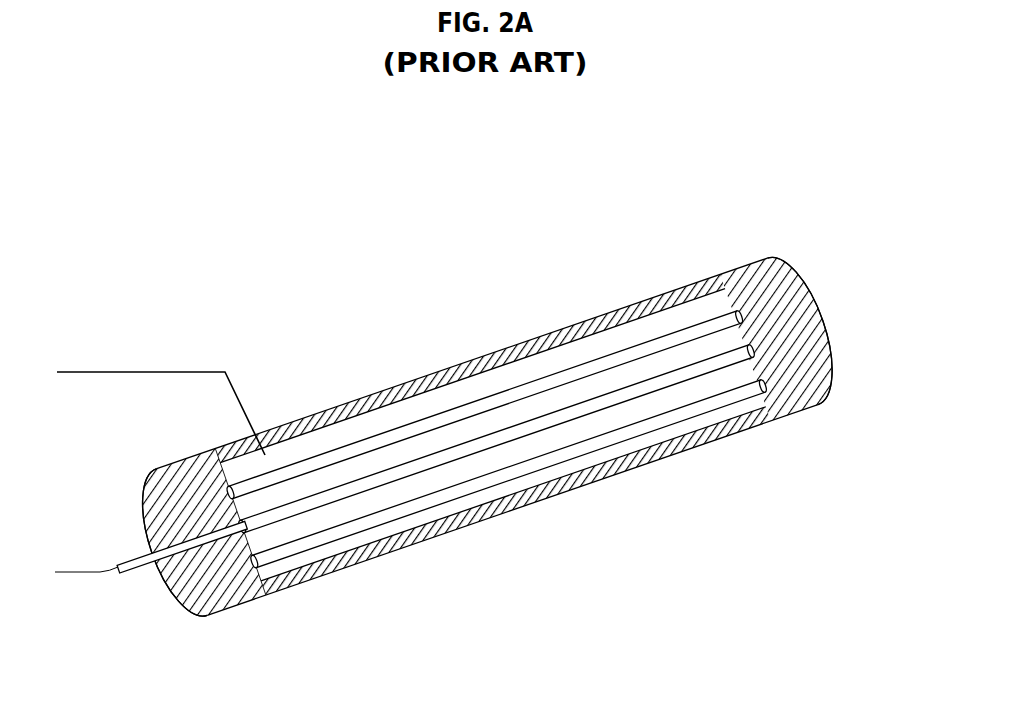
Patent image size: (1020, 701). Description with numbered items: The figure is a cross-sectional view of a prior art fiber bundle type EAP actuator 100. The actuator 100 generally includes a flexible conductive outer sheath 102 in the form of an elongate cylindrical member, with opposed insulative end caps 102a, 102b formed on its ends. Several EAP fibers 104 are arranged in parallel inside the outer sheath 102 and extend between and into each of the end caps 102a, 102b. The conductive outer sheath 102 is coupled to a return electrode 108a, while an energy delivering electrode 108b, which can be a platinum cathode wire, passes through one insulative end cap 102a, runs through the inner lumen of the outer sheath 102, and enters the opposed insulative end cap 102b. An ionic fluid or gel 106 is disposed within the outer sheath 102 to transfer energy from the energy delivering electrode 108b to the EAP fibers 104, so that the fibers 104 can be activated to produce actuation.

The EAP actuator 100 is at (193, 238).
The flexible conductive outer sheath 102 is at (552, 330).
The insulative end cap 102a is at (207, 585).
The insulative end cap 102b is at (785, 317).
The EAP fibers 104 is at (379, 438).
The ionic fluid or gel 106 is at (553, 473).
The return electrode 108a is at (150, 481).
The energy delivering electrode 108b is at (129, 372).